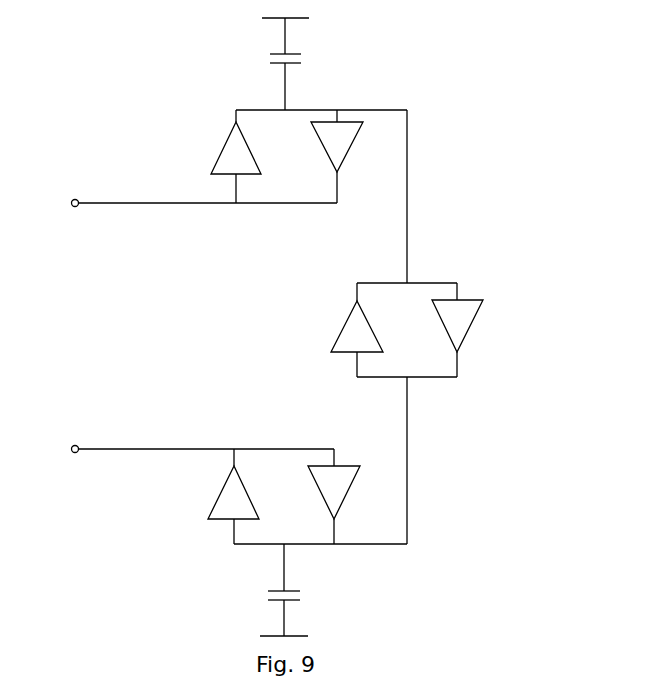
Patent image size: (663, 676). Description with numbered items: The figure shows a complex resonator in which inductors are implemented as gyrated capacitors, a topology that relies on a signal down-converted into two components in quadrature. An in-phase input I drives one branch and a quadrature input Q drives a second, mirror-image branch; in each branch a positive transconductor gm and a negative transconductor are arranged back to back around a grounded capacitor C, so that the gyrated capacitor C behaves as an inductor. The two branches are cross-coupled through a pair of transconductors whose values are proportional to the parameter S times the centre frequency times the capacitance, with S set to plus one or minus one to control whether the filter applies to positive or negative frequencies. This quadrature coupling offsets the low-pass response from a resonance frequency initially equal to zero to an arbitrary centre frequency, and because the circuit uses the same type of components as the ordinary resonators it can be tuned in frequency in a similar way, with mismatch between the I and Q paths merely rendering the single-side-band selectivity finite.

The capacitor C is at (296, 327).
The transconductor gm is at (220, 327).
The I signal path I is at (193, 192).
The Q signal path Q is at (188, 446).